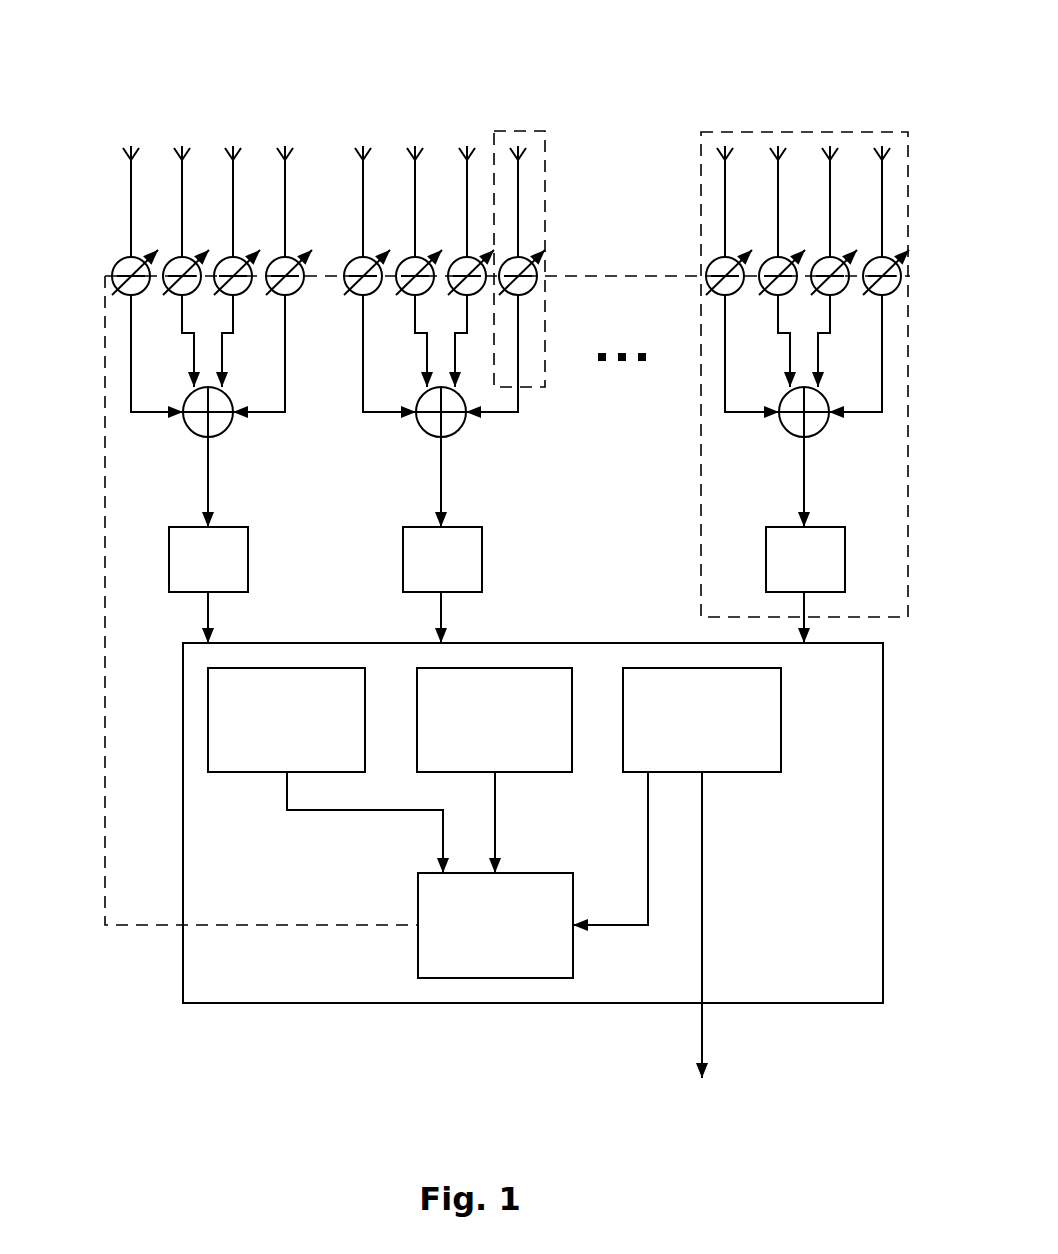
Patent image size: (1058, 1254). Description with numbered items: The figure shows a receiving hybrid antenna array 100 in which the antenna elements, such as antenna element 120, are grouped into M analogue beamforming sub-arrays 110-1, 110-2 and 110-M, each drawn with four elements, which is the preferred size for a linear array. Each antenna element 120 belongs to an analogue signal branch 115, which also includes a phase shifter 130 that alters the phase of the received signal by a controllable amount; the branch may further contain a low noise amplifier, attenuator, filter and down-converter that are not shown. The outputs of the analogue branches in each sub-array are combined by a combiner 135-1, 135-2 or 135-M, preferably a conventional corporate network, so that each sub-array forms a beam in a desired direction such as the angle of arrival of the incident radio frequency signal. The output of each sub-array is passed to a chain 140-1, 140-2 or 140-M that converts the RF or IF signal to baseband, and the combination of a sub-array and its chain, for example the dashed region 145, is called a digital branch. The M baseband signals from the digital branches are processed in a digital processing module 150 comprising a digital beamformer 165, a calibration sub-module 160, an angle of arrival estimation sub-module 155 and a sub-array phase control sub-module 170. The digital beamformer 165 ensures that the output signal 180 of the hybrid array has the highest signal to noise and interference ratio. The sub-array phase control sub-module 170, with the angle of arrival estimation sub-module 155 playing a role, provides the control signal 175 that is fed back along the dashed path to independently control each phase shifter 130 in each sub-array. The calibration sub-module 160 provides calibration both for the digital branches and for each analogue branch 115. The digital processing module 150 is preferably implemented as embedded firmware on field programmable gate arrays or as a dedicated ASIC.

The receiving hybrid antenna array 100 is at (221, 127).
The first analogue beamforming sub-array 110-1 is at (266, 133).
The second analogue beamforming sub-array 110-2 is at (493, 226).
The M-th analogue beamforming sub-array 110-M is at (800, 152).
The analogue signal branch 115 is at (568, 228).
The antenna element 120 is at (520, 186).
The phase shifter 130 is at (538, 252).
The first combiner 135-1 is at (227, 430).
The second combiner 135-2 is at (465, 432).
The M-th combiner 135-M is at (790, 437).
The first chain 140-1 is at (248, 555).
The second chain 140-2 is at (482, 555).
The M-th chain 140-M is at (818, 527).
The digital branch 145 is at (730, 132).
The digital processing module 150 is at (602, 643).
The angle of arrival estimation sub-module 155 is at (252, 772).
The calibration sub-module 160 is at (560, 772).
The digital beamformer 165 is at (770, 772).
The sub-array phase control sub-module 170 is at (418, 960).
The control signal 175 is at (162, 925).
The output signal 180 is at (702, 1040).